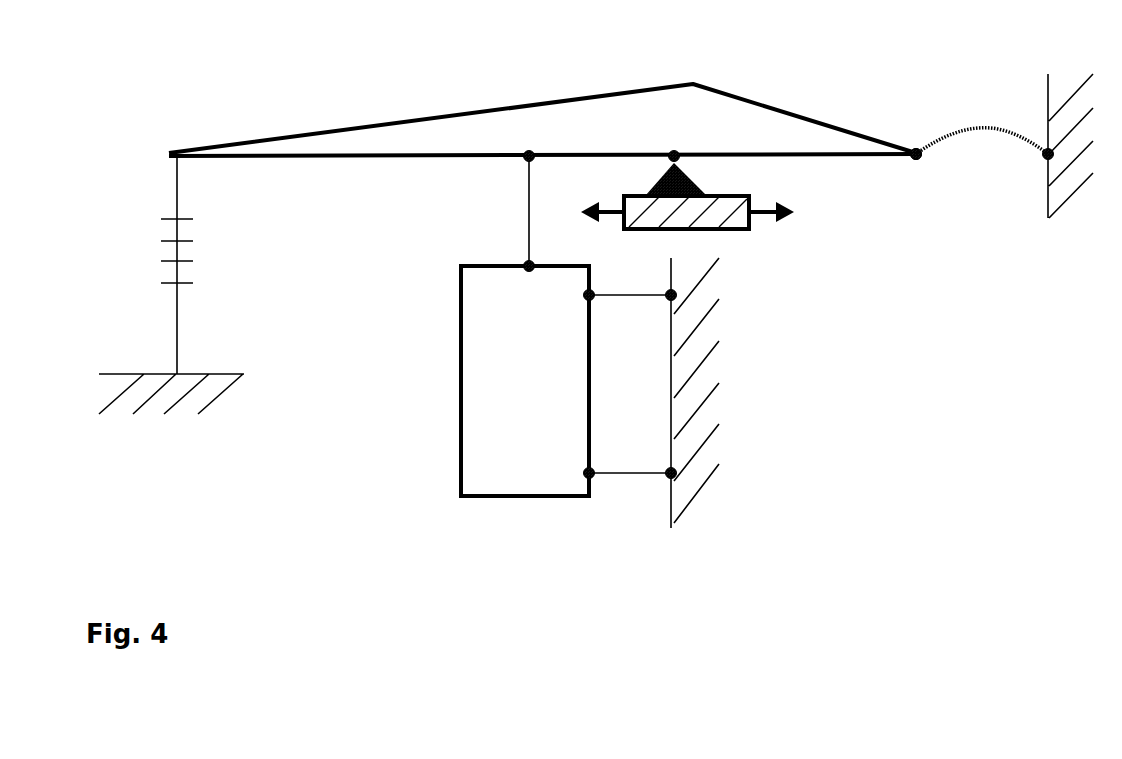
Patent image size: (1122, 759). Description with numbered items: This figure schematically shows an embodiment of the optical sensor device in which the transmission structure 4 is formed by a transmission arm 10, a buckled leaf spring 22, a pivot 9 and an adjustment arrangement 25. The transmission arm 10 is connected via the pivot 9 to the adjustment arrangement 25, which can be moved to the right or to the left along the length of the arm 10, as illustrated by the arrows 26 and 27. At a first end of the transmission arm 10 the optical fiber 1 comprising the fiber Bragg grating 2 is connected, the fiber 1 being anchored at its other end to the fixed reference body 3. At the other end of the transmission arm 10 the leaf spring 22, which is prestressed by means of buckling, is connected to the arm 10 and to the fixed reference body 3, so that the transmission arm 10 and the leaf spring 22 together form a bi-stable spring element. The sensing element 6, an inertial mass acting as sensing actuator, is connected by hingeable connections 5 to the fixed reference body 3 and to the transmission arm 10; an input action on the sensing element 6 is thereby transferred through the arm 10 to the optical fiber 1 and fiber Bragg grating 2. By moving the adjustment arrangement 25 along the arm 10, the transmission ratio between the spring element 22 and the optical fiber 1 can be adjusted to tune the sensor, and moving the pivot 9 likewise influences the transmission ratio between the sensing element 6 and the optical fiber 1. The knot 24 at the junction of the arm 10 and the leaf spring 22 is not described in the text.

The optical fiber 1 is at (178, 178).
The fiber Bragg grating 2 is at (176, 245).
The fixed reference body 3 is at (215, 372).
The transmission structure 4 is at (415, 152).
The hingeable connections 5 is at (528, 195).
The sensing element 6 is at (458, 367).
The pivot 9 is at (683, 163).
The transmission arm 10 is at (620, 92).
The leaf spring 22 is at (990, 128).
The knot 24 is at (897, 143).
The adjustment arrangement 25 is at (737, 230).
The arrow 26 is at (760, 210).
The arrow 27 is at (608, 205).